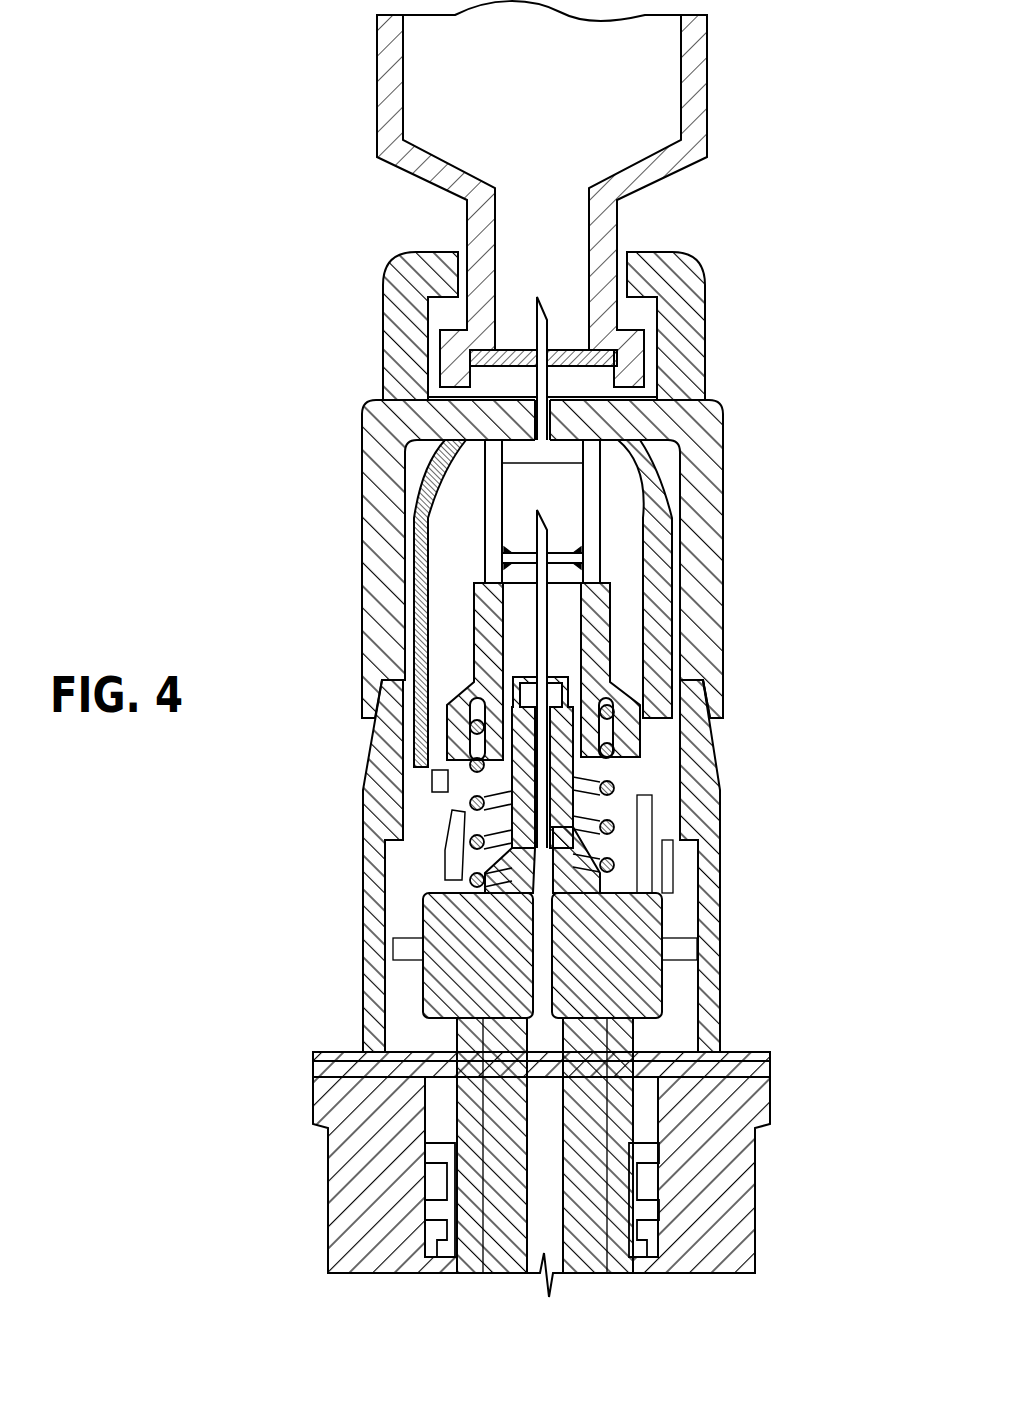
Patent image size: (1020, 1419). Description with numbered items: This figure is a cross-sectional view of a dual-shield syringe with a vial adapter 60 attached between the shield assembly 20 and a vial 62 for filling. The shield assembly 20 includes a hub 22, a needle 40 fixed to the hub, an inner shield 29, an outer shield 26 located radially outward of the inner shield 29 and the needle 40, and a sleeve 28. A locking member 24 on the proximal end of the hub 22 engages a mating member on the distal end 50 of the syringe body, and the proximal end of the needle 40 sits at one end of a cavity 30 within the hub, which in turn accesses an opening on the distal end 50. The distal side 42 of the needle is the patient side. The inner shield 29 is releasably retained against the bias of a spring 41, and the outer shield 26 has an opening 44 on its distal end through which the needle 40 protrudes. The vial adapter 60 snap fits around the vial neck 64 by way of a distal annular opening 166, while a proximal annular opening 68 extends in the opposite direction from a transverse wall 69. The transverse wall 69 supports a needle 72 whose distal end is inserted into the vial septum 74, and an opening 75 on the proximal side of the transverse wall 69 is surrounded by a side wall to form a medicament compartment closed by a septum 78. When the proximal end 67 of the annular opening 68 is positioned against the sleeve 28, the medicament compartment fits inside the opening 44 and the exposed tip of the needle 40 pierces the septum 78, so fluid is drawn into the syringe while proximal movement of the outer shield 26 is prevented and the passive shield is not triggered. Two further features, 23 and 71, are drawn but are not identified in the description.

The shield assembly 20 is at (509, 549).
The hub 22 is at (633, 978).
The retaining bracket 23 is at (452, 868).
The locking member 24 is at (633, 1150).
The outer shield 26 is at (663, 633).
The sleeve 28 is at (380, 813).
The inner shield 29 is at (600, 656).
The cavity 30 is at (517, 1018).
The needle 40 is at (508, 582).
The spring 41 is at (614, 825).
The distal side of the needle 42 is at (545, 513).
The opening 44 is at (523, 460).
The distal end of the syringe body 50 is at (313, 1103).
The vial adapter 60 is at (718, 278).
The vial 62 is at (529, 229).
The vial neck 64 is at (598, 232).
The proximal end 67 is at (717, 684).
The proximal annular opening 68 is at (463, 445).
The transverse wall 69 is at (622, 427).
The right notch 71 is at (512, 547).
The needle 72 is at (538, 300).
The vial septum 74 is at (620, 356).
The opening 75 is at (418, 460).
The septum 78 is at (580, 547).
The distal annular opening 166 is at (462, 265).